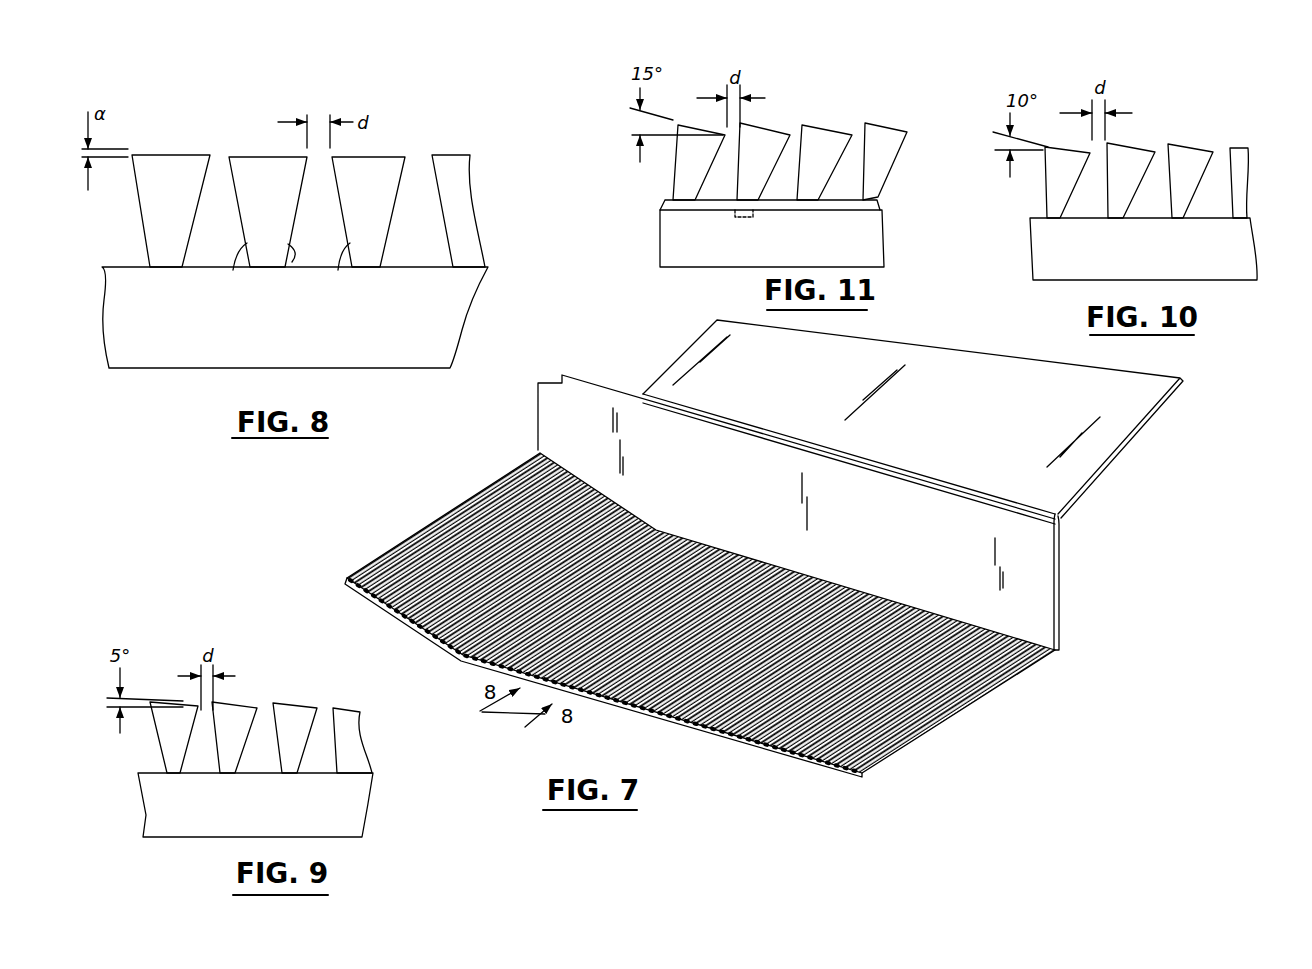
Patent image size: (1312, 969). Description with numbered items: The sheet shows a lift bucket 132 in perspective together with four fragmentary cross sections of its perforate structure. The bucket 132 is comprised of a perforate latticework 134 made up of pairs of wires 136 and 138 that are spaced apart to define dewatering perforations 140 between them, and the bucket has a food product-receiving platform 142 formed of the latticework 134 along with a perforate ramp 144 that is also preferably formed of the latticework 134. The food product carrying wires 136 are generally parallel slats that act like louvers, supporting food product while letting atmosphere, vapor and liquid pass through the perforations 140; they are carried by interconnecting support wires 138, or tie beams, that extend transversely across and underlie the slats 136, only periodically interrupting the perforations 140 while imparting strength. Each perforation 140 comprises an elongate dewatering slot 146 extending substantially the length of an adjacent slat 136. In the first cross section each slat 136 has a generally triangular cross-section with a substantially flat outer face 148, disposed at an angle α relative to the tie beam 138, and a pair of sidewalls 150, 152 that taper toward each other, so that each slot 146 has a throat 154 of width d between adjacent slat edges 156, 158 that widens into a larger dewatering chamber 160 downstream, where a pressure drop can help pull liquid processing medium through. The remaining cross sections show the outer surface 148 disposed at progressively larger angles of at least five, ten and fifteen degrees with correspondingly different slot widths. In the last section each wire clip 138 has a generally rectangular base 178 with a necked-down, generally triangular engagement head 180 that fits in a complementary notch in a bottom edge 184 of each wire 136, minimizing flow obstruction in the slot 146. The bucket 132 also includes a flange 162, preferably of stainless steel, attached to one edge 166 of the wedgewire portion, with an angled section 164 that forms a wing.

In FIG. 7, the lift bucket 132 is at (377, 612).
In FIG. 7, the perforate latticework 134 is at (352, 592).
In FIG. 8, the perforate latticework 134 is at (483, 152).
In FIG. 9, the perforate latticework 134 is at (137, 788).
In FIG. 11, the perforate latticework 134 is at (764, 114).
In FIG. 7, the food product carrying wires 136 is at (437, 517).
In FIG. 8, the food product carrying wires 136 is at (133, 150).
In FIG. 10, the food product carrying wires 136 is at (1045, 192).
In FIG. 11, the food product carrying wires 136 is at (790, 123).
In FIG. 7, the support wires 138 is at (417, 627).
In FIG. 8, the support wires 138 is at (101, 352).
In FIG. 9, the support wires 138 is at (167, 829).
In FIG. 10, the support wires 138 is at (1067, 284).
In FIG. 11, the support wires 138 is at (660, 237).
In FIG. 7, the dewatering perforations 140 is at (728, 730).
In FIG. 8, the dewatering perforations 140 is at (208, 148).
In FIG. 9, the dewatering perforations 140 is at (267, 706).
In FIG. 10, the dewatering perforations 140 is at (1162, 140).
In FIG. 11, the dewatering perforations 140 is at (857, 130).
In FIG. 7, the food product-receiving platform 142 is at (1004, 708).
In FIG. 7, the perforate ramp 144 is at (503, 467).
In FIG. 8, the elongate dewatering slot 146 is at (432, 150).
In FIG. 9, the elongate dewatering slot 146 is at (328, 752).
In FIG. 10, the elongate dewatering slot 146 is at (1075, 207).
In FIG. 11, the elongate dewatering slot 146 is at (727, 173).
In FIG. 8, the outer face 148 is at (148, 150).
In FIG. 9, the outer face 148 is at (153, 700).
In FIG. 10, the outer face 148 is at (1068, 125).
In FIG. 11, the outer face 148 is at (677, 125).
In FIG. 8, the sidewall 150 is at (292, 262).
In FIG. 8, the sidewall 152 is at (233, 270).
In FIG. 8, the throat 154 is at (318, 167).
In FIG. 8, the slat edge 156 is at (336, 152).
In FIG. 8, the slat edge 158 is at (306, 153).
In FIG. 8, the dewatering chamber 160 is at (318, 232).
In FIG. 7, the flange 162 is at (583, 364).
In FIG. 7, the angled section 164 is at (1179, 372).
In FIG. 7, the edge 166 is at (533, 447).
In FIG. 11, the base 178 is at (873, 253).
In FIG. 11, the engagement head 180 is at (875, 204).
In FIG. 11, the bottom edge 184 is at (873, 201).